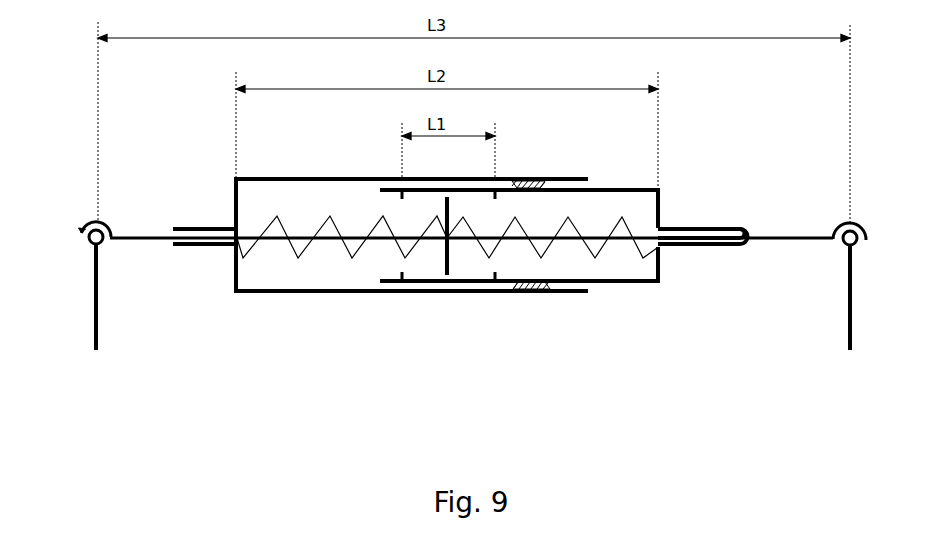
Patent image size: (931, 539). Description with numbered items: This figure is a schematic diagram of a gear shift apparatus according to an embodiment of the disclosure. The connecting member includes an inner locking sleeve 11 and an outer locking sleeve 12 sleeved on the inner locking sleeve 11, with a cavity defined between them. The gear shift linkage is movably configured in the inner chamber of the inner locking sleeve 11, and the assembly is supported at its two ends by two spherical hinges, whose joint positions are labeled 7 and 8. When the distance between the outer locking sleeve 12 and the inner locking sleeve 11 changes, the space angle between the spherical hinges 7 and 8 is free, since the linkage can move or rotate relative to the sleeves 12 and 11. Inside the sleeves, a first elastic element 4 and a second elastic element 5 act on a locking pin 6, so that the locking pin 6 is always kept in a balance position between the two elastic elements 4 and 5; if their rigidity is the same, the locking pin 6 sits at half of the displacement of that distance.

The first elastic element 4 is at (547, 252).
The second elastic element 5 is at (357, 245).
The locking pin 6 is at (450, 252).
The spherical hinge joint 7 is at (90, 243).
The spherical hinge joint 8 is at (853, 247).
The inner locking sleeve 11 is at (648, 283).
The outer locking sleeve 12 is at (258, 291).